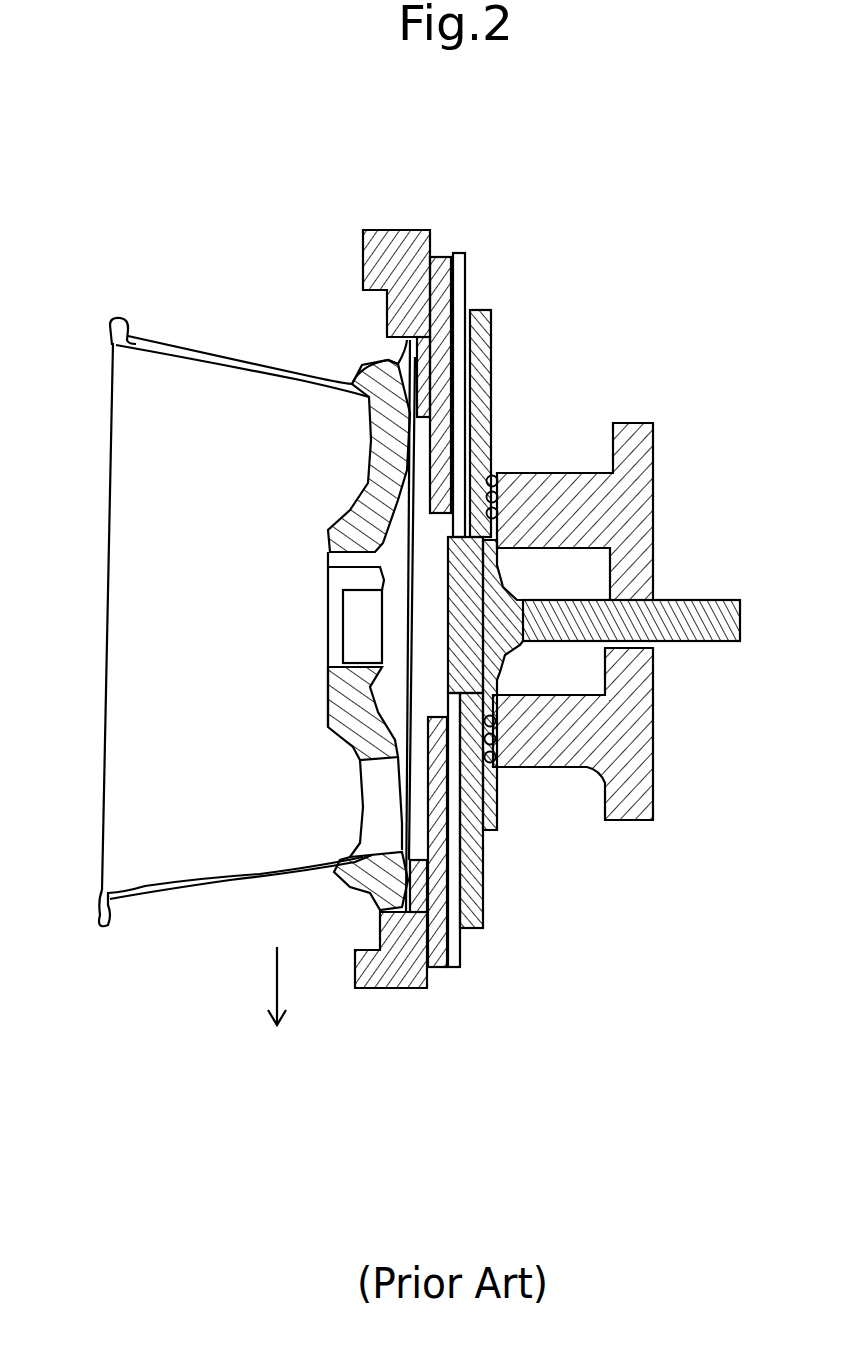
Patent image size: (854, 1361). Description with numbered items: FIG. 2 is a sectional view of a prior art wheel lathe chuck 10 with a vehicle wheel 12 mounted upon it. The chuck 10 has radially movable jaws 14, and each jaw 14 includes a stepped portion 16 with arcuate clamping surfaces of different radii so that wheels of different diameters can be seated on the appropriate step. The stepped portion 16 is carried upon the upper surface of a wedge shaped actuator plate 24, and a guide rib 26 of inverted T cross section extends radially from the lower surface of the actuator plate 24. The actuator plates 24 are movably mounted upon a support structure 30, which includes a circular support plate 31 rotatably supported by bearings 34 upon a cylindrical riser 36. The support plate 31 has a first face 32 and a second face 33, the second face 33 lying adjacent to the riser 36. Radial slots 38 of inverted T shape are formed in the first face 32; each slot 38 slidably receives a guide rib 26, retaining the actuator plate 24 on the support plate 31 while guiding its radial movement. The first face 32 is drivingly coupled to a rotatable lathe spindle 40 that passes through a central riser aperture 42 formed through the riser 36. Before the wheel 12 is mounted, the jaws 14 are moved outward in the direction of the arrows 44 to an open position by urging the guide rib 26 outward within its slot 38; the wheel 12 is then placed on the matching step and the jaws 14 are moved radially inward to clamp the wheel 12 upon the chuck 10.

The wheel lathe chuck 10 is at (392, 643).
The vehicle wheel 12 is at (110, 510).
The jaw 14 is at (359, 643).
The stepped portion 16 is at (357, 975).
The actuator plate 24 is at (432, 975).
The guide rib 26 is at (443, 713).
The support structure 30 is at (533, 585).
The support plate 31 is at (473, 308).
The first face 32 is at (447, 623).
The second face 33 is at (480, 878).
The bearings 34 is at (502, 470).
The riser 36 is at (567, 470).
The radial slot 38 is at (483, 683).
The lathe spindle 40 is at (700, 600).
The central riser aperture 42 is at (657, 647).
The arrows 44 is at (259, 986).